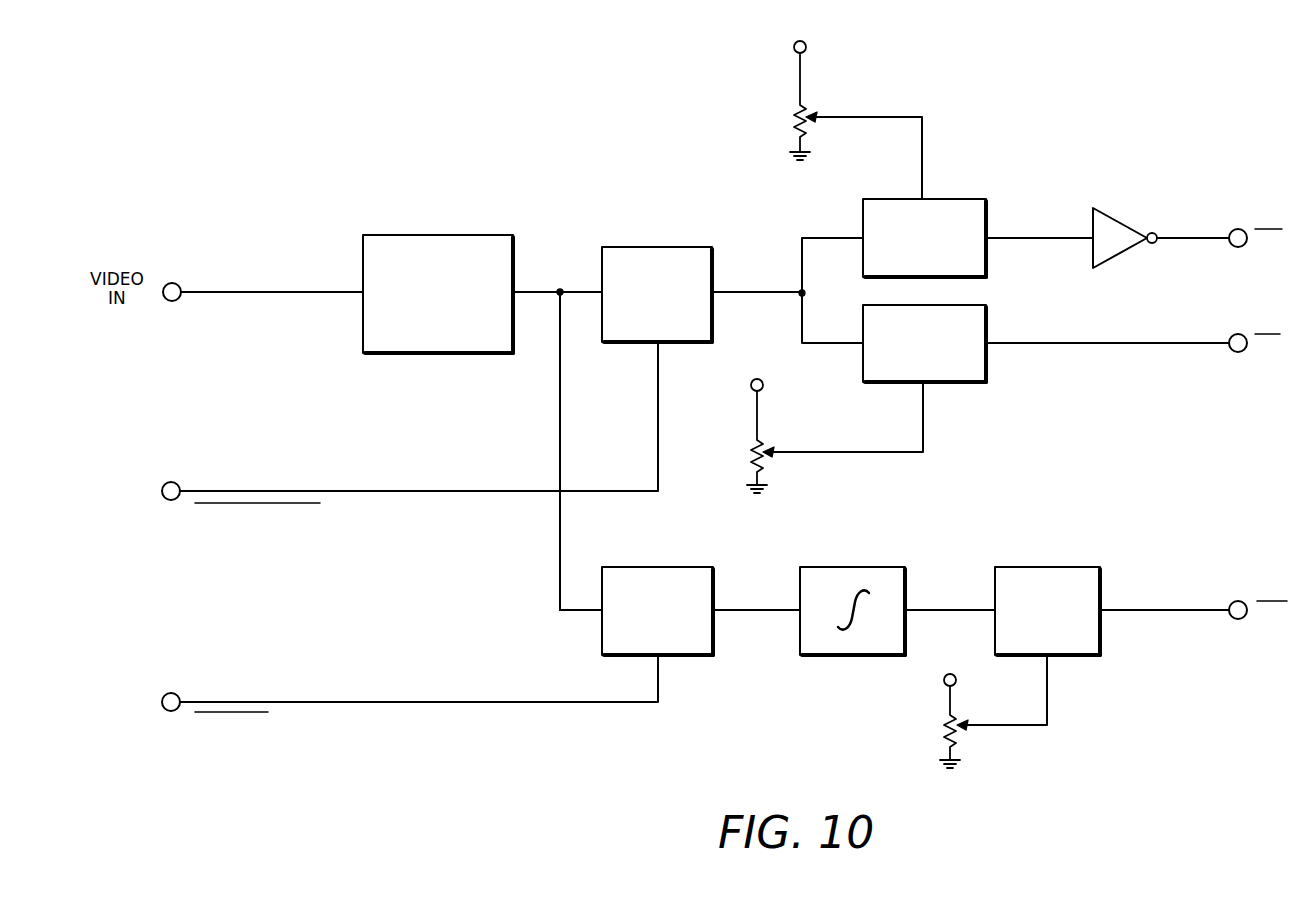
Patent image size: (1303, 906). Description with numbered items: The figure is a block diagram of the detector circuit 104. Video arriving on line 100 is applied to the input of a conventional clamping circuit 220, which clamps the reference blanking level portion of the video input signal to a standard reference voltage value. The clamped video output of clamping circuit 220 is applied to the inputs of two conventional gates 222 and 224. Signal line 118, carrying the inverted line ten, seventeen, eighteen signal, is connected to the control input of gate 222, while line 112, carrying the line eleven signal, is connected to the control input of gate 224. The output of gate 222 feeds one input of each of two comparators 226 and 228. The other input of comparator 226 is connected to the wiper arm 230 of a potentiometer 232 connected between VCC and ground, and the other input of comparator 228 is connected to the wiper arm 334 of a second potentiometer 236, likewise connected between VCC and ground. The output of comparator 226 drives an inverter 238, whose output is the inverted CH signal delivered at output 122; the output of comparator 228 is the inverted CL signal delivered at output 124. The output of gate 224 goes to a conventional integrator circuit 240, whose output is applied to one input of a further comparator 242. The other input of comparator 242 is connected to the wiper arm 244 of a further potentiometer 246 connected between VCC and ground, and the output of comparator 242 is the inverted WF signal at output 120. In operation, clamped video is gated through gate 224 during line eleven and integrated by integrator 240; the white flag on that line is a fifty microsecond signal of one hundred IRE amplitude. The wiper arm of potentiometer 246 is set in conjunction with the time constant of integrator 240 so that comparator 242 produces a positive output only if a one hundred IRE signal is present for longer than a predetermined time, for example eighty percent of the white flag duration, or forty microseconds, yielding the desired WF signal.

The detector circuit 104 is at (326, 92).
The video line 100 is at (250, 290).
The clamping circuit 220 is at (468, 235).
The gate 222 is at (666, 247).
The gate 224 is at (668, 567).
The comparator 226 is at (955, 199).
The comparator 228 is at (985, 310).
The wiper arm 230 is at (848, 117).
The potentiometer 232 is at (795, 116).
The reference line 334 is at (812, 452).
The second potentiometer 236 is at (750, 453).
The inverter 238 is at (1113, 224).
The CH output 122 is at (1200, 235).
The CL output 124 is at (1098, 343).
The signal line 118 is at (270, 490).
The line 112 is at (305, 700).
The integrator circuit 240 is at (866, 567).
The comparator 242 is at (1057, 567).
The WF output 120 is at (1128, 608).
The potentiometer 246 is at (940, 729).
The wiper arm 244 is at (979, 729).